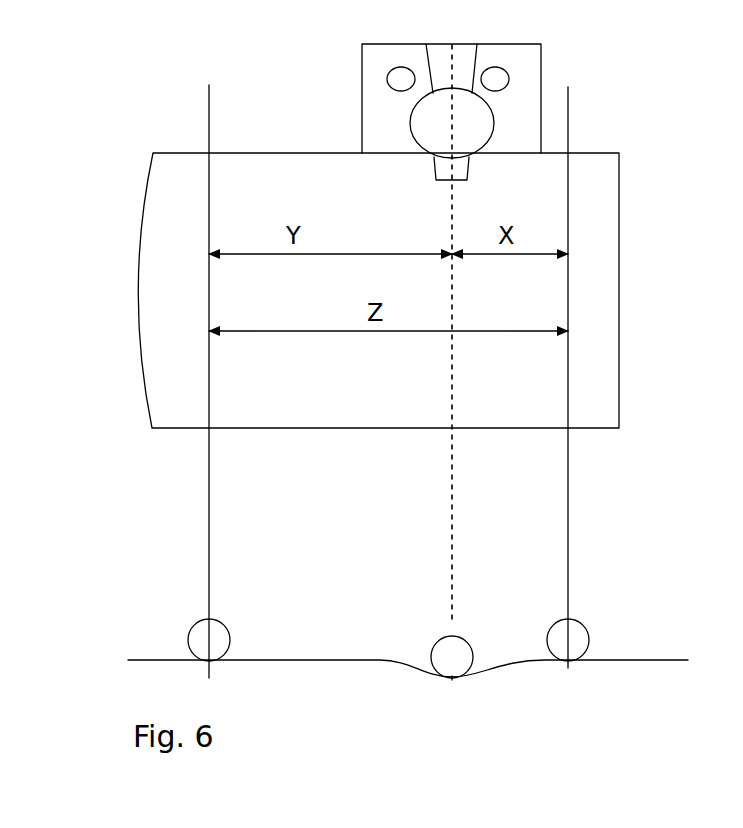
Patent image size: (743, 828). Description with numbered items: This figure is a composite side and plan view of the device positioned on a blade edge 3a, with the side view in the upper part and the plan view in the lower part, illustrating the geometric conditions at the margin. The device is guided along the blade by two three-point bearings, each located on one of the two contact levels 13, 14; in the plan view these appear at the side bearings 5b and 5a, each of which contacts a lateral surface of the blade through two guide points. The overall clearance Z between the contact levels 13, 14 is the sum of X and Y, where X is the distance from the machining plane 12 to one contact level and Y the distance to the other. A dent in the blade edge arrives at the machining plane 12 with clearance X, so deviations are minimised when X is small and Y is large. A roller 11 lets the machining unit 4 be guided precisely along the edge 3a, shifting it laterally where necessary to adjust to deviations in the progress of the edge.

The edge 3a is at (326, 148).
The machining unit 4 is at (442, 115).
The contact level 13 is at (210, 117).
The contact level 14 is at (569, 103).
The machining plane 12 is at (452, 513).
The side bearing 5b is at (218, 633).
The side bearing 5a is at (572, 635).
The roller 11 is at (455, 658).